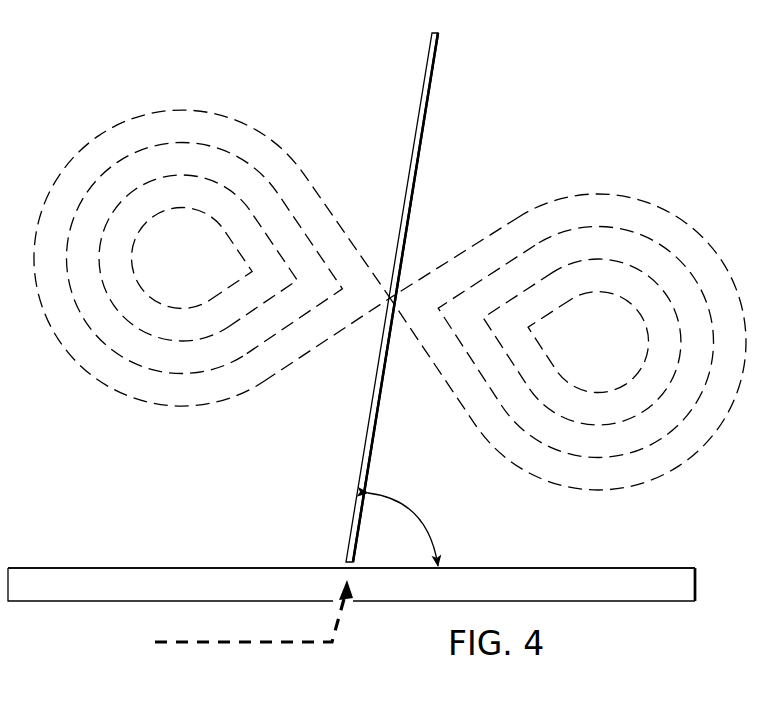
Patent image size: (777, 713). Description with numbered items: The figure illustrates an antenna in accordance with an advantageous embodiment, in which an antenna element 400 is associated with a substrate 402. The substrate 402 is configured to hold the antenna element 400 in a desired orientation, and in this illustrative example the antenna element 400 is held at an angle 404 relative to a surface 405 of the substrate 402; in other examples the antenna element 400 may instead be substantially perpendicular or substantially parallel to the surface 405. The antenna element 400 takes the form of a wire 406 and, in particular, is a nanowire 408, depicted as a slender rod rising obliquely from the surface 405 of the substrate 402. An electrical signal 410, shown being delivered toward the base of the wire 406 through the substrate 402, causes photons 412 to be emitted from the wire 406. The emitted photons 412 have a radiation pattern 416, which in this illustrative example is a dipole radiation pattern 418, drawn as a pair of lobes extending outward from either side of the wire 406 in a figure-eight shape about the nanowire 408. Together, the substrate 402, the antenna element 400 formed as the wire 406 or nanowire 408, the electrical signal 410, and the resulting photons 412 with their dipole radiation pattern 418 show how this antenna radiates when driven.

The antenna element 400 is at (68, 564).
The substrate 402 is at (650, 567).
The angle 404 is at (418, 514).
The surface 405 is at (199, 577).
The wire 406 is at (419, 104).
The nanowire 408 is at (431, 73).
The electrical signal 410 is at (256, 645).
The photons 412 is at (673, 222).
The radiation pattern 416 is at (390, 259).
The dipole radiation pattern 418 is at (137, 118).